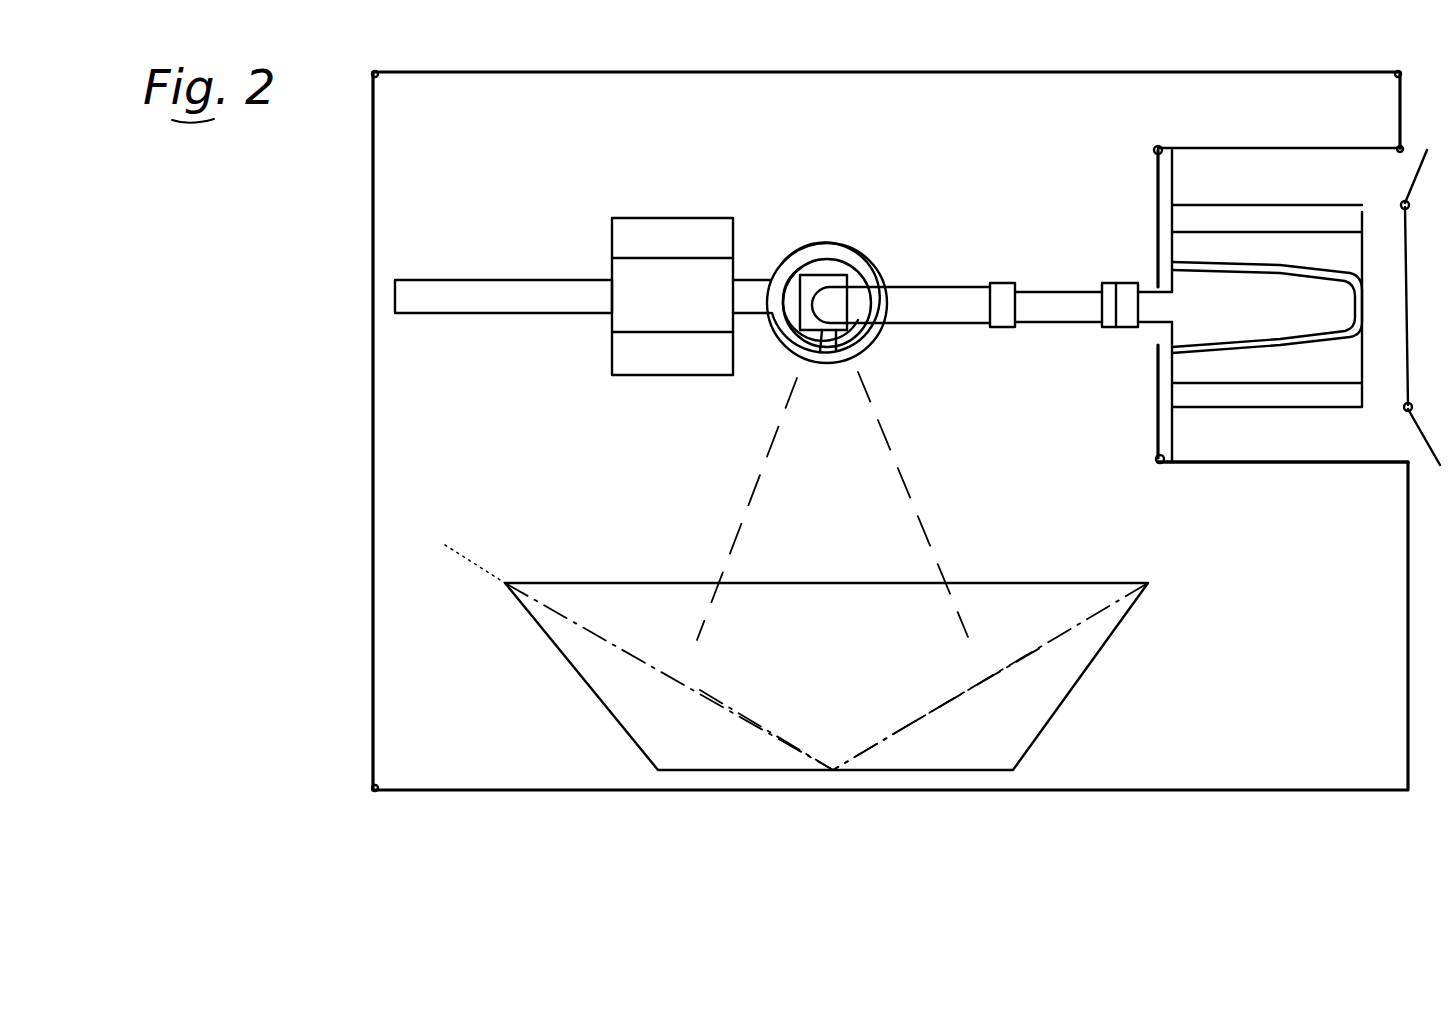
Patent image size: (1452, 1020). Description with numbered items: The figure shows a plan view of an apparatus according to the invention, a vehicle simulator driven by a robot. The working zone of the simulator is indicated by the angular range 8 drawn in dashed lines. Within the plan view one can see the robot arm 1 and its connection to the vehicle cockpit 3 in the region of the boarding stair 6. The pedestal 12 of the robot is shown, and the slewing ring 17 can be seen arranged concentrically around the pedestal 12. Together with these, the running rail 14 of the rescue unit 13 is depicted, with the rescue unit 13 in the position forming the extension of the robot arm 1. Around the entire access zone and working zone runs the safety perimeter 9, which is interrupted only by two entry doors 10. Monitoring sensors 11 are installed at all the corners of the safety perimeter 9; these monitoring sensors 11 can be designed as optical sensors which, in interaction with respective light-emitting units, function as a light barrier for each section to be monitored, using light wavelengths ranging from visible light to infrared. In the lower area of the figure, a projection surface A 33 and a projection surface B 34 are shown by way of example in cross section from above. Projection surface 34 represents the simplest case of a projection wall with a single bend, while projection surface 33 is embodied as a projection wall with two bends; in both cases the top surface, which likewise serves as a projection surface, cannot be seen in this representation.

The robot arm 1 is at (1045, 326).
The vehicle cockpit 3 is at (1250, 315).
The boarding stair 6 is at (1310, 375).
The angular range 8 is at (778, 553).
The safety perimeter 9 is at (1407, 605).
The entry doors 10 is at (1418, 433).
The monitoring sensors 11 is at (1157, 148).
The pedestal 12 is at (852, 258).
The rescue unit 13 is at (679, 218).
The running rail 14 is at (523, 280).
The slewing ring 17 is at (812, 232).
The projection surface A 33 is at (755, 768).
The projection surface B 34 is at (905, 725).